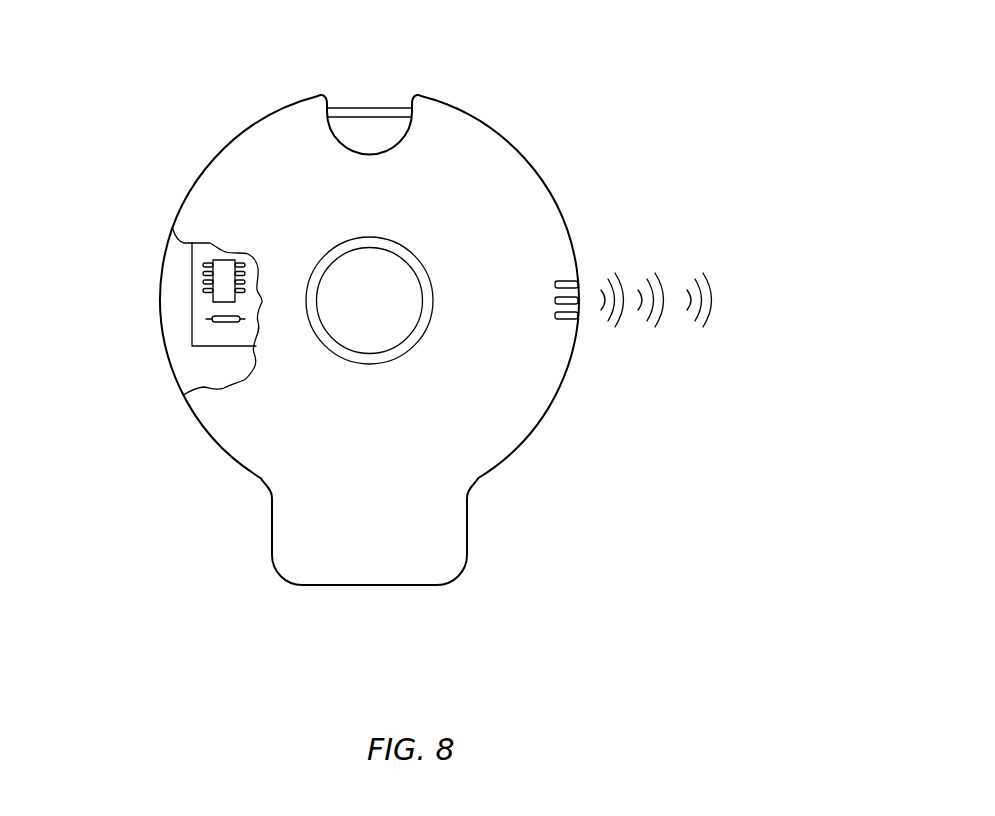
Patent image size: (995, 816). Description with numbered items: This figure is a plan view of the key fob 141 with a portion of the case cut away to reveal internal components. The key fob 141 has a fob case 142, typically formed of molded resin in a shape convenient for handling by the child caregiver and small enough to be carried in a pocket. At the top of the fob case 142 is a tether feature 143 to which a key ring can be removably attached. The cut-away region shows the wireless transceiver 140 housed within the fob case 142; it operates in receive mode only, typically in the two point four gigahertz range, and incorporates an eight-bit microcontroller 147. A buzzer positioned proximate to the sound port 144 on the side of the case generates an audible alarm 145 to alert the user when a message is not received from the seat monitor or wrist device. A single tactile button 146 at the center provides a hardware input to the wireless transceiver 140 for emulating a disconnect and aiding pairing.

The wireless transceiver 140 is at (192, 300).
The key fob 141 is at (323, 299).
The fob case 142 is at (267, 117).
The tether feature 143 is at (370, 107).
The sound port 144 is at (568, 281).
The audible alarm 145 is at (710, 297).
The tactile button 146 is at (408, 248).
The microcontroller 147 is at (192, 250).